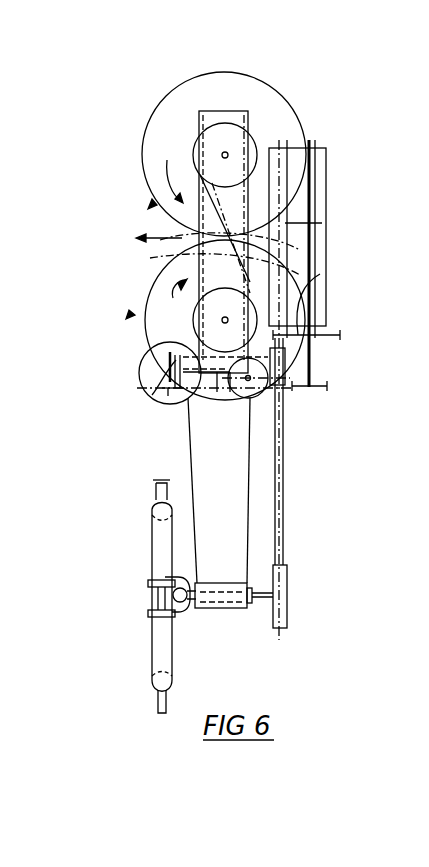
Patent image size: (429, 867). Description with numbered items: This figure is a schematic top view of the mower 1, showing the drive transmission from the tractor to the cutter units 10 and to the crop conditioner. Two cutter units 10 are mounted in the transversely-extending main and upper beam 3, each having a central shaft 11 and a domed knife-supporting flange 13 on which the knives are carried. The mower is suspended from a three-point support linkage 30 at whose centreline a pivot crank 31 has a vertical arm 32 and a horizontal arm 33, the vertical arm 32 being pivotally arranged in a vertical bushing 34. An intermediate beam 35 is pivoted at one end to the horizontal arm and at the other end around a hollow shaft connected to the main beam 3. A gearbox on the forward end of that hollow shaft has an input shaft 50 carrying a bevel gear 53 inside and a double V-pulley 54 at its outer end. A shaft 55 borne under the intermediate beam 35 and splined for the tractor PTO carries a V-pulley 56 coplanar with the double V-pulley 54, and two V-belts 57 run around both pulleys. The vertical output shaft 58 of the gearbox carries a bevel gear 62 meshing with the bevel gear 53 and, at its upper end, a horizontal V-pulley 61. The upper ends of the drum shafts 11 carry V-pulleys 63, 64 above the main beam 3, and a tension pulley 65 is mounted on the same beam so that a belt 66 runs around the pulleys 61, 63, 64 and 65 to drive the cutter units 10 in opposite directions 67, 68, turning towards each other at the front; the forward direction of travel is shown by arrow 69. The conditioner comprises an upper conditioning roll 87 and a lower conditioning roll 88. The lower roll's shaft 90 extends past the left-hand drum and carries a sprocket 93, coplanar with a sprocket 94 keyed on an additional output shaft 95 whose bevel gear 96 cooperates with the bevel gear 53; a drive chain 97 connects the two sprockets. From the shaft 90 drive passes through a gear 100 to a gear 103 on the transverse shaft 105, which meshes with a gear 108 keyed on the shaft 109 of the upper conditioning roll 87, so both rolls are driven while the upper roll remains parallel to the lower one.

The mower 1 is at (140, 110).
The main and upper beam 3 is at (225, 155).
The cutter unit 10 is at (155, 205).
The central shaft 11 is at (258, 134).
The knife-supporting flange 13 is at (172, 90).
The three-point support linkage 30 is at (152, 632).
The pivot crank 31 is at (197, 608).
The vertical arm 32 is at (178, 608).
The horizontal arm 33 is at (249, 606).
The vertical bushing 34 is at (148, 583).
The intermediate beam 35 is at (247, 545).
The input shaft 50 is at (213, 395).
The bevel gear 53 is at (180, 392).
The double V-pulley 54 is at (268, 395).
The shaft 55 is at (263, 604).
The V-pulley 56 is at (287, 600).
The V-belts 57 is at (283, 507).
The vertical output shaft 58 is at (190, 382).
The V-pulley 61 is at (205, 392).
The bevel gear 62 is at (165, 368).
The V-pulley 63 is at (192, 312).
The V-pulley 64 is at (188, 153).
The tension pulley 65 is at (285, 400).
The belt 66 is at (150, 258).
The direction of rotation 67 is at (145, 276).
The direction of rotation 68 is at (170, 180).
The arrow of forward direction 69 is at (172, 238).
The upper conditioning roll 87 is at (287, 140).
The lower conditioning roll 88 is at (326, 186).
The shaft 90 is at (312, 370).
The sprocket 93 is at (320, 390).
The sprocket 94 is at (220, 402).
The additional output shaft 95 is at (232, 407).
The bevel gear 96 is at (165, 355).
The drive chain 97 is at (245, 412).
The gear 100 is at (336, 338).
The gear 103 is at (318, 320).
The transverse shaft 105 is at (315, 252).
The gear 108 is at (300, 297).
The shaft 109 is at (322, 223).